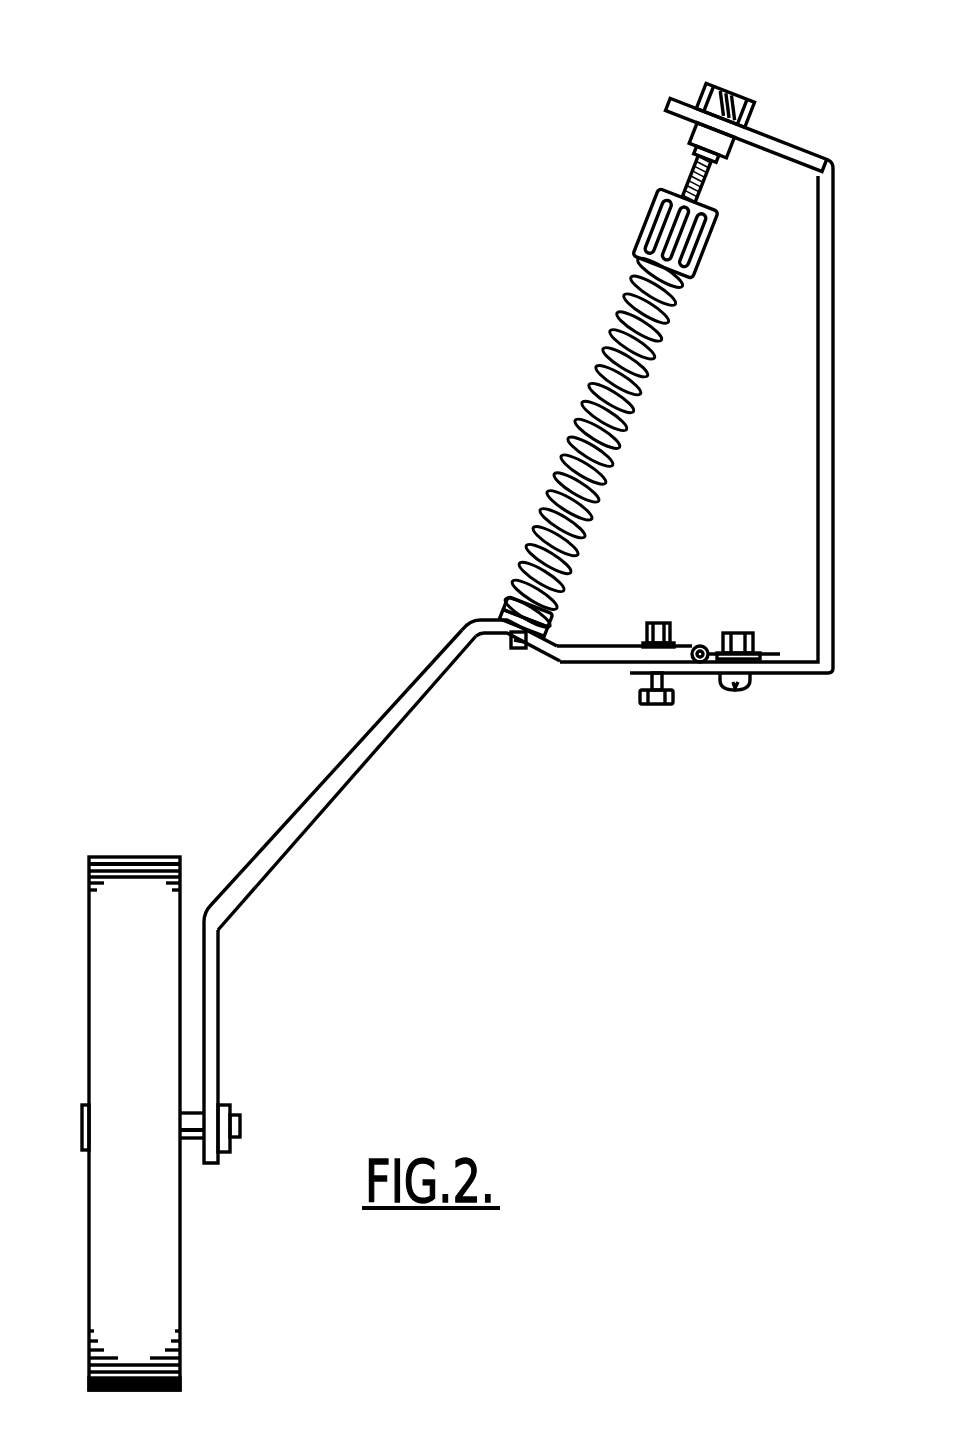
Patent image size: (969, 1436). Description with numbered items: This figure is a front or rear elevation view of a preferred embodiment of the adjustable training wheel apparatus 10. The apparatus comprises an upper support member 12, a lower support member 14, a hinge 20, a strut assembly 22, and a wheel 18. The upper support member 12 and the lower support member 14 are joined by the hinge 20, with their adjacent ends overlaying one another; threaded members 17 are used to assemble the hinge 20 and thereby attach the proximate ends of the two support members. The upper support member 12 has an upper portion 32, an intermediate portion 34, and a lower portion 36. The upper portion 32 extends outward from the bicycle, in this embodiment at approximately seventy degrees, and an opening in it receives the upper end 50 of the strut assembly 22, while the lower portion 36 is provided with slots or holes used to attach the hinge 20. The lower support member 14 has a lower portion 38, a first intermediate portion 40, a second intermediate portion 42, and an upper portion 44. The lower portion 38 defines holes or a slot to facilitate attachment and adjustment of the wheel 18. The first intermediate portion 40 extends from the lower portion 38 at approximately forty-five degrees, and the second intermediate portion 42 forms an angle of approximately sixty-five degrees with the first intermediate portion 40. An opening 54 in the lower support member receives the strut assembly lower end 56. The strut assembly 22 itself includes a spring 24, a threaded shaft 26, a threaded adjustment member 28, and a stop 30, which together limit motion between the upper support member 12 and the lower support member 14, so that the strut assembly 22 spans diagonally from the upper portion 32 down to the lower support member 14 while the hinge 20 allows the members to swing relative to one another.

The adjustable training wheel apparatus 10 is at (546, 86).
The upper support member 12 is at (813, 379).
The lower support member 14 is at (343, 746).
The threaded members 17 is at (660, 706).
The wheel 18 is at (115, 1022).
The hinge 20 is at (689, 647).
The strut assembly 22 is at (573, 366).
The spring 24 is at (555, 485).
The threaded shaft 26 is at (688, 170).
The threaded adjustment member 28 is at (645, 212).
The stop 30 is at (503, 606).
The upper portion of the upper support member 32 is at (762, 133).
The intermediate portion of the upper support member 34 is at (822, 458).
The lower portion of the upper support member 36 is at (702, 676).
The lower portion of the lower support member 38 is at (213, 1022).
The first intermediate portion of the lower support member 40 is at (326, 800).
The second intermediate portion of the lower support member 42 is at (535, 656).
The upper portion of the lower support member 44 is at (594, 640).
The upper end of the strut assembly 50 is at (695, 92).
The opening 54 is at (505, 638).
The strut assembly lower end 56 is at (497, 581).